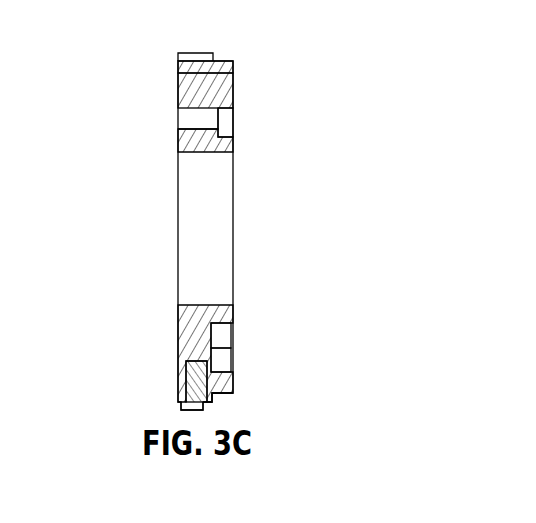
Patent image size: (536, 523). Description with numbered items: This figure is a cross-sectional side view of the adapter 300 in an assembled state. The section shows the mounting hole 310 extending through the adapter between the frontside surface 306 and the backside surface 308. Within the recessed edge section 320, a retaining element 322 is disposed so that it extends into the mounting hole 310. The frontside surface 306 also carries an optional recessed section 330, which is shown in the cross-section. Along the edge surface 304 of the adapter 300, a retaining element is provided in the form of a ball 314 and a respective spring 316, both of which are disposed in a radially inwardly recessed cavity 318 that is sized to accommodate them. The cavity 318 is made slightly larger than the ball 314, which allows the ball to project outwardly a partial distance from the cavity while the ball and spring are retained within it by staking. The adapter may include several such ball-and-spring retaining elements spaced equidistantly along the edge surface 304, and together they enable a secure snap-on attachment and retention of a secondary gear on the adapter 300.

The adapter 300 is at (285, 42).
The edge surface 304 is at (190, 53).
The frontside surface 306 is at (235, 383).
The backside surface 308 is at (178, 318).
The mounting hole 310 is at (228, 123).
The ball 314 is at (182, 409).
The spring 316 is at (184, 363).
The radially inwardly recessed cavity 318 is at (200, 362).
The recessed edge section 320 is at (213, 399).
The retaining element 322 is at (223, 62).
The recessed section 330 is at (232, 335).